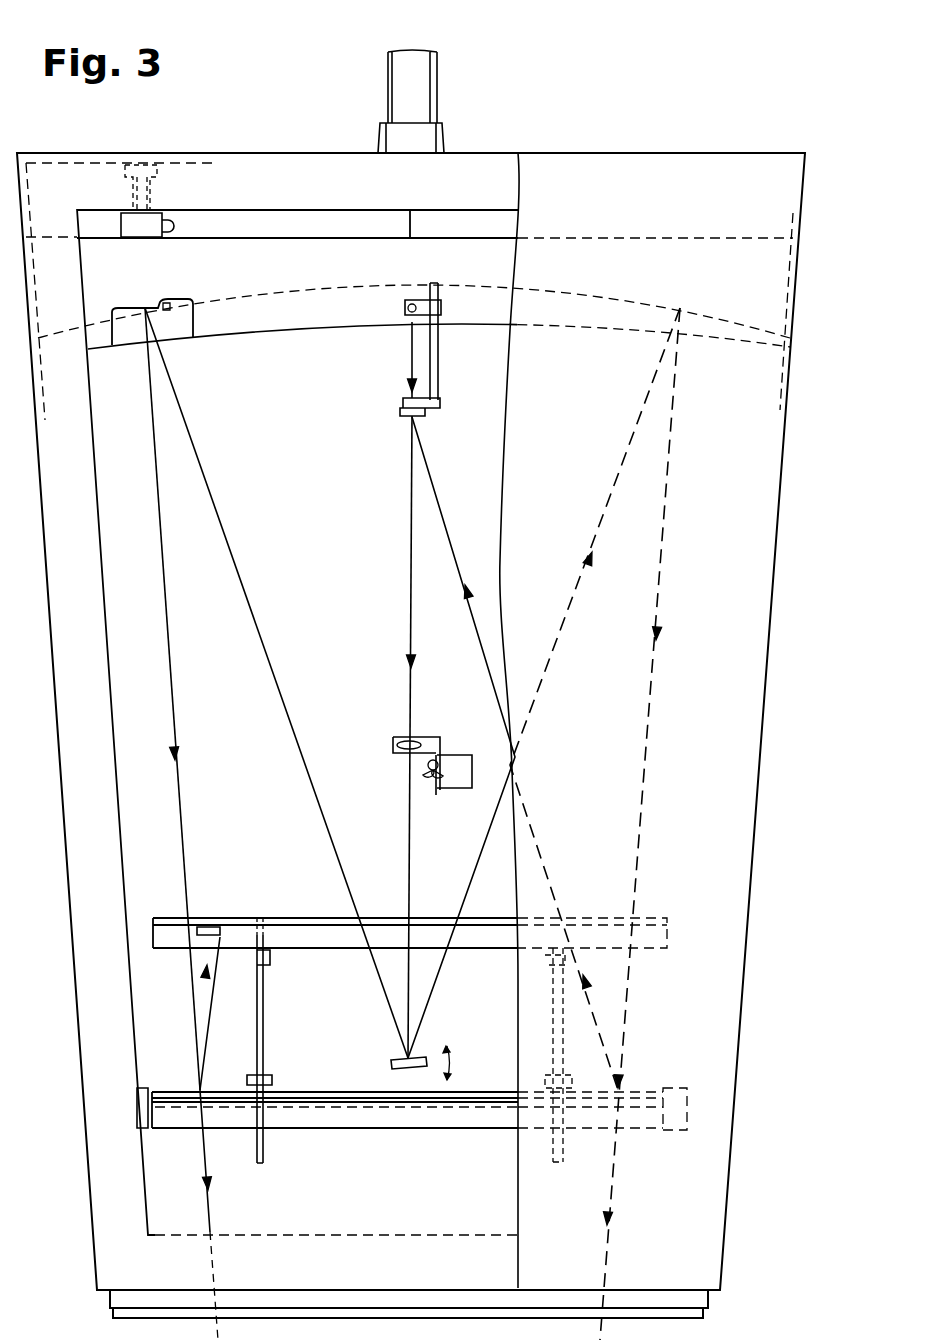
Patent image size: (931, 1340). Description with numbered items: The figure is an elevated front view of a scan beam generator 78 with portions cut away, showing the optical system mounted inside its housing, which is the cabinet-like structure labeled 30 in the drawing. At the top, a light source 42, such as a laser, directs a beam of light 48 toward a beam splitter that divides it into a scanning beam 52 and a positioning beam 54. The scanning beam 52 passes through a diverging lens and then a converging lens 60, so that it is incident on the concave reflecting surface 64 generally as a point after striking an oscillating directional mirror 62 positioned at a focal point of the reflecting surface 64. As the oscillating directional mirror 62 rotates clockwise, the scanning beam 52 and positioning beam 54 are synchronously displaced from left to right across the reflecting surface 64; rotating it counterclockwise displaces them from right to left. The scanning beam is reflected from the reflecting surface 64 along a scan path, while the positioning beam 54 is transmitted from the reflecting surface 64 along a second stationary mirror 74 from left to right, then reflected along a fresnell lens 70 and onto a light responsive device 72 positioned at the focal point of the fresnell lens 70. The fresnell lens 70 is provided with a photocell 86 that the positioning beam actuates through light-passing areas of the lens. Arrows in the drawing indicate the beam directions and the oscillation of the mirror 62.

The cabinet housing 30 is at (783, 480).
The light source 42 is at (445, 70).
The beam of light 48 is at (410, 230).
The scanning beam 52 is at (412, 342).
The positioning beam 54 is at (412, 372).
The converging lens 60 is at (400, 738).
The oscillating directional mirror 62 is at (393, 1062).
The concave reflecting surface 64 is at (165, 310).
The fresnell lens 70 is at (250, 912).
The light responsive device 72 is at (408, 420).
The second stationary mirror 74 is at (385, 1125).
The scan beam generator 78 is at (557, 128).
The photocell 86 is at (210, 937).